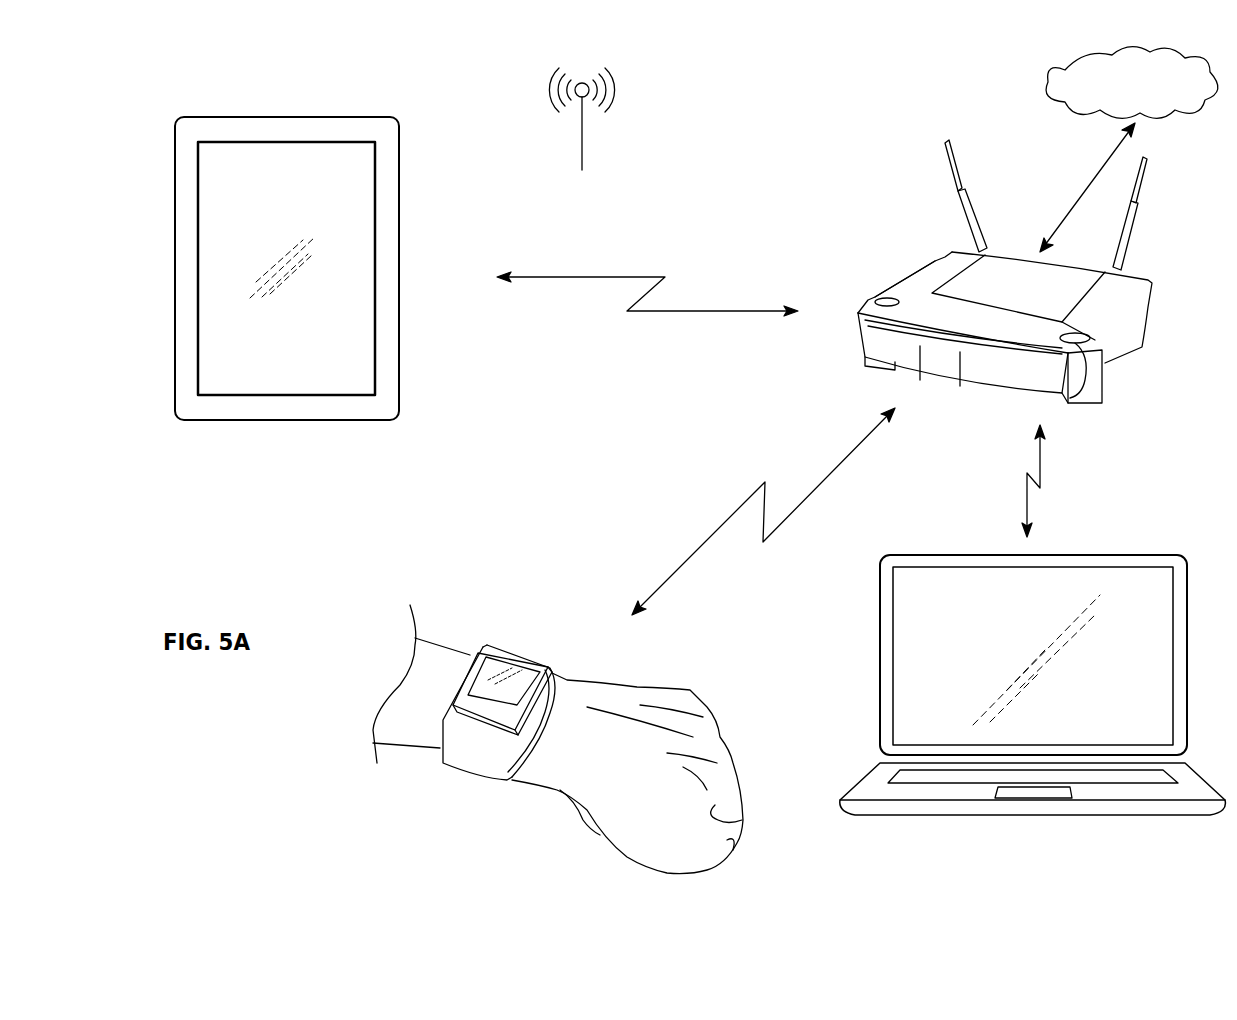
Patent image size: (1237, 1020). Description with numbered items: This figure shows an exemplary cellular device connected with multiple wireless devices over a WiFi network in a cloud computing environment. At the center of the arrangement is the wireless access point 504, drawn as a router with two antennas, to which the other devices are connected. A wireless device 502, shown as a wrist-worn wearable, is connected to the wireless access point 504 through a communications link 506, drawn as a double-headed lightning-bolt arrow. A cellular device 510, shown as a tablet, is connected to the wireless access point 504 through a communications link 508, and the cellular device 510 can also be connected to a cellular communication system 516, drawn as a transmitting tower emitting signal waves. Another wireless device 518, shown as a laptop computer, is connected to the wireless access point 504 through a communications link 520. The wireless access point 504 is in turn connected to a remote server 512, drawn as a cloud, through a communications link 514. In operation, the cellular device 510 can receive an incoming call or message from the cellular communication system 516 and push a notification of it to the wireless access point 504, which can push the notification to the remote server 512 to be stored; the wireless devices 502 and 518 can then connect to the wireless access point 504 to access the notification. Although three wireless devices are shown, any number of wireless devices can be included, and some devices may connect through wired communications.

The wireless device 502 is at (522, 652).
The wireless access point 504 is at (1152, 290).
The communications link 506 is at (733, 516).
The communications link 508 is at (580, 275).
The cellular device 510 is at (400, 178).
The remote server 512 is at (1043, 82).
The communications link 514 is at (1097, 196).
The cellular communication system 516 is at (584, 133).
The wireless device 518 is at (1143, 555).
The communications link 520 is at (1024, 505).